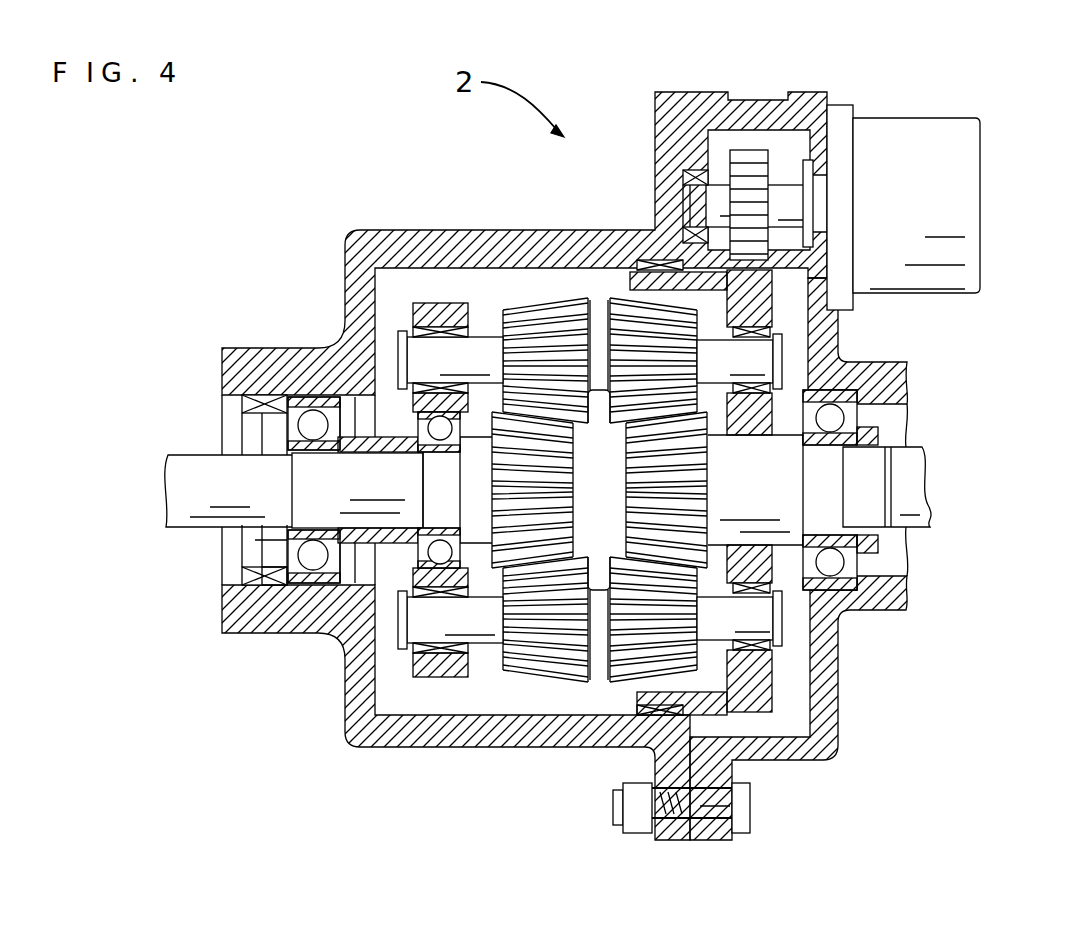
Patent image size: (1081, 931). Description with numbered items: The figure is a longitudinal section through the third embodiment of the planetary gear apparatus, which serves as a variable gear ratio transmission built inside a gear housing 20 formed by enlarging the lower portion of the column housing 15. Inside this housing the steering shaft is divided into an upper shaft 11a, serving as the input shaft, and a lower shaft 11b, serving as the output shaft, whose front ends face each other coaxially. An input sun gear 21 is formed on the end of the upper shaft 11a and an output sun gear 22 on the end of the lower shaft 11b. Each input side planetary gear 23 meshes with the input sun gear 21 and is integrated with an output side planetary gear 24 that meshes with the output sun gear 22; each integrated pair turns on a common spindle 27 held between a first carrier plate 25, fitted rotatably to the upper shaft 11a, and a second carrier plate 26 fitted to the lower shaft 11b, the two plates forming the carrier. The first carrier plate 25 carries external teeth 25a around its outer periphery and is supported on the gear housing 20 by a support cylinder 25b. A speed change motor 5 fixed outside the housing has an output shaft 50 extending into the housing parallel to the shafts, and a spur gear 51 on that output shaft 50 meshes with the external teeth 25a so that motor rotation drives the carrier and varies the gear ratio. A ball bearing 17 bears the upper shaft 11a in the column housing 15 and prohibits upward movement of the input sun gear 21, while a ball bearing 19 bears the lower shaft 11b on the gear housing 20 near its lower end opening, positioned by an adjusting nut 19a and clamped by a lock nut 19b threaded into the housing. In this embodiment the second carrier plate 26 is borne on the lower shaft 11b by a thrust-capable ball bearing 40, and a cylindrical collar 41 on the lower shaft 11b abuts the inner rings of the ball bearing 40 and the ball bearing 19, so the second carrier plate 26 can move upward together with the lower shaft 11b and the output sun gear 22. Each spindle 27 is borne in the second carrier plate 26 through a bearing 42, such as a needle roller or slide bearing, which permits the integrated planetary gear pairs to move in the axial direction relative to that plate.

The speed change motor 5 is at (903, 130).
The upper shaft 11a is at (905, 455).
The lower shaft 11b is at (195, 462).
The column housing 15 is at (900, 370).
The ball bearing 17 is at (840, 557).
The ball bearing 19 is at (313, 396).
The adjusting nut 19a is at (275, 588).
The lock nut 19b is at (232, 578).
The gear housing 20 is at (662, 188).
The input sun gear 21 is at (703, 478).
The output sun gear 22 is at (497, 480).
The input side planetary gear 23 is at (612, 296).
The output side planetary gear 24 is at (530, 305).
The first carrier plate 25 is at (763, 698).
The external teeth 25a is at (752, 720).
The support cylinder 25b is at (650, 760).
The second carrier plate 26 is at (436, 672).
The spindle 27 is at (775, 360).
The ball bearing 40 is at (472, 338).
The cylindrical collar 41 is at (392, 437).
The bearing 42 is at (408, 335).
The output shaft 50 is at (782, 190).
The spur gear 51 is at (745, 150).